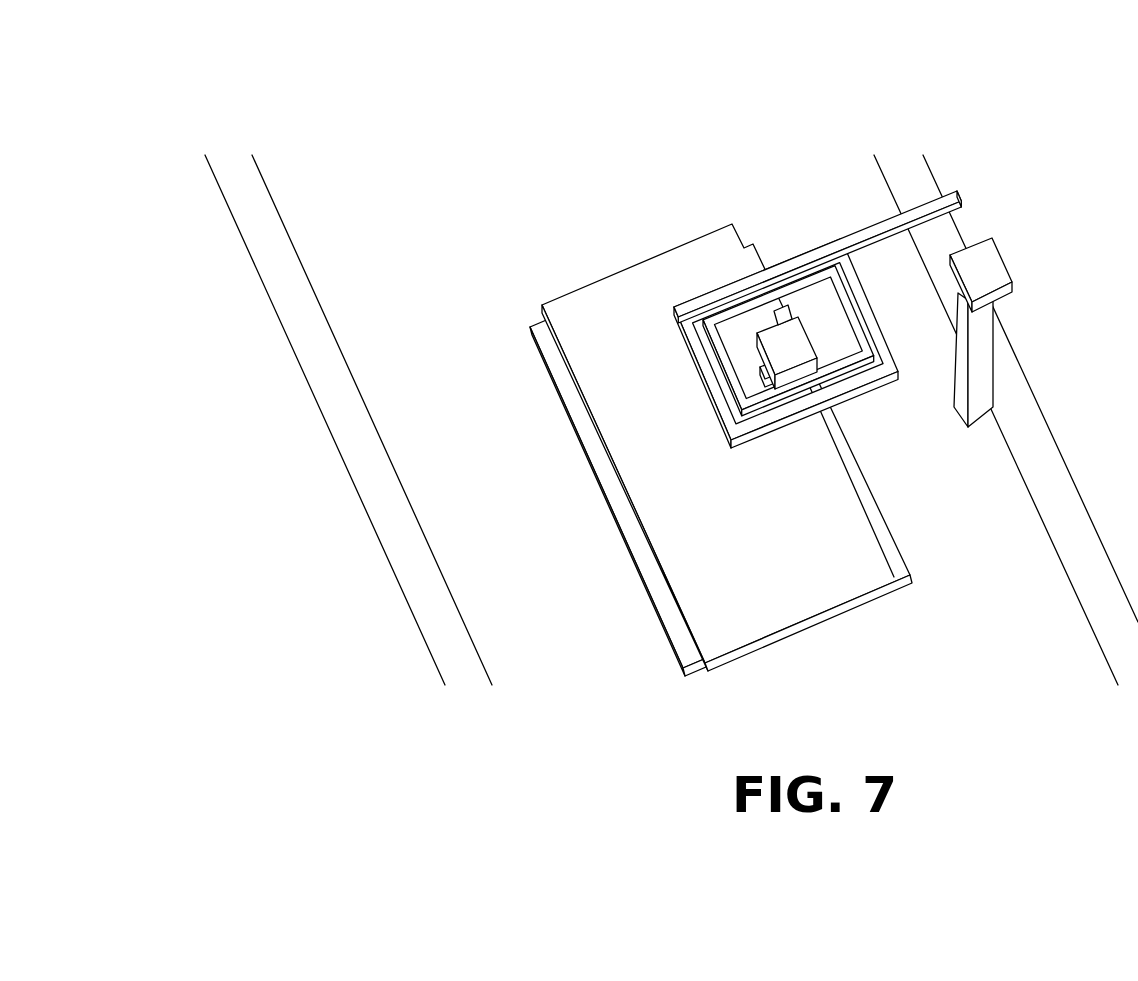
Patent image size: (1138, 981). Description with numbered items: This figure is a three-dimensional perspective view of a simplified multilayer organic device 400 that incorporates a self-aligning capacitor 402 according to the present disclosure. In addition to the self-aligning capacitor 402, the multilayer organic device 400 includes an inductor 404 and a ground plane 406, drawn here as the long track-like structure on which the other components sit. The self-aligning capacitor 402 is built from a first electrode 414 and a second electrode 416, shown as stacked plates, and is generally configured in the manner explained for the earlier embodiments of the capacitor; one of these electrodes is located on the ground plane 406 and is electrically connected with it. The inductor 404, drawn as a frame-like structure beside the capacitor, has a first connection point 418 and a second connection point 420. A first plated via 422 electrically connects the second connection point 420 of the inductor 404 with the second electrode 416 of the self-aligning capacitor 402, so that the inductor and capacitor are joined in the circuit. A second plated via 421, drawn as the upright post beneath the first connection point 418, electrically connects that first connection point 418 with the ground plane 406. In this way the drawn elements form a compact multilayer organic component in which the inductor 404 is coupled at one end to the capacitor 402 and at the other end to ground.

The multilayer organic device 400 is at (262, 90).
The self-aligning capacitor 402 is at (590, 460).
The inductor 404 is at (848, 213).
The ground plane 406 is at (1000, 606).
The first electrode 414 is at (625, 540).
The second electrode 416 is at (668, 583).
The first connection point 418 is at (990, 272).
The second connection point 420 is at (813, 367).
The second plated via 421 is at (993, 358).
The first plated via 422 is at (793, 387).